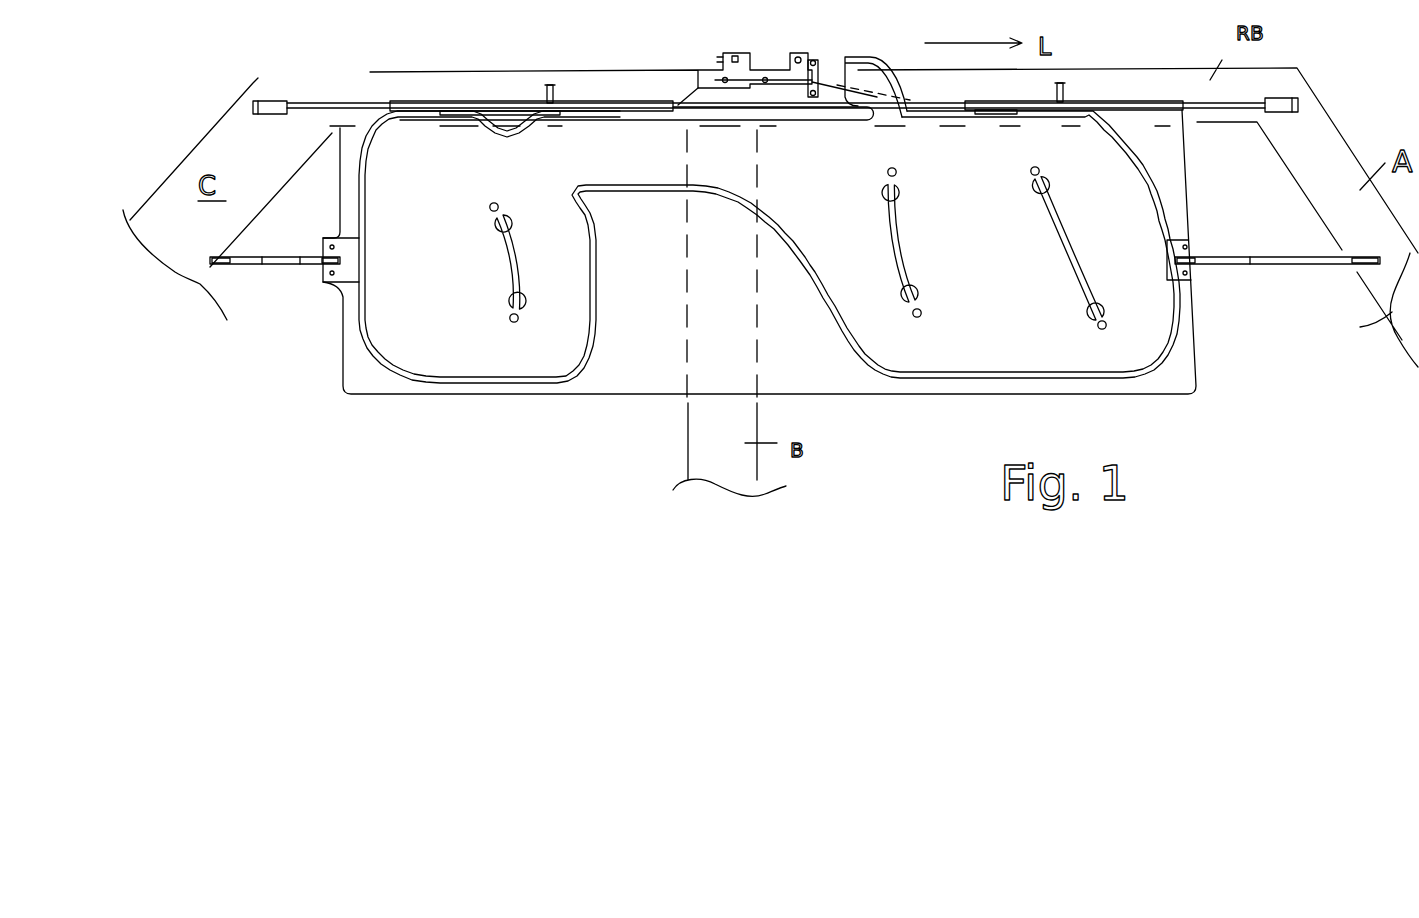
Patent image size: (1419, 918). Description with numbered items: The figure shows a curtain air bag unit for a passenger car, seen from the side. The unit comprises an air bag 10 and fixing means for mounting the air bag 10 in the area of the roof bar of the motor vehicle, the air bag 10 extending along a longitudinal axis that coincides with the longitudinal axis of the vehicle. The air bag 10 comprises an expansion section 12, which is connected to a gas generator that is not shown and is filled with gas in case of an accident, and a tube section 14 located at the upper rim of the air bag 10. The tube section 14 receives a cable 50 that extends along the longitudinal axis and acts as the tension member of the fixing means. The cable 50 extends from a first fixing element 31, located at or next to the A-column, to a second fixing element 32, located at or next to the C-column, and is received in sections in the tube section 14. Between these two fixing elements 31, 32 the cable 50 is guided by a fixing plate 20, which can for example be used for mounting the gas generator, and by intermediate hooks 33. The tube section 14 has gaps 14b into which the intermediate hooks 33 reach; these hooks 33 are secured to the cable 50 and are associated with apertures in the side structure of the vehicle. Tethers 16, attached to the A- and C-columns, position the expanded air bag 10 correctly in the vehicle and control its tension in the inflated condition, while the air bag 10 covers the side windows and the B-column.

The air bag 10 is at (1163, 313).
The expansion section 12 is at (1006, 345).
The tube section 14 is at (445, 100).
The gaps 14b is at (540, 100).
The tethers 16 is at (280, 264).
The fixing plate 20 is at (762, 67).
The first fixing element 31 is at (1282, 104).
The second fixing element 32 is at (268, 100).
The intermediate hooks 33 is at (553, 93).
The cable 50 is at (330, 103).